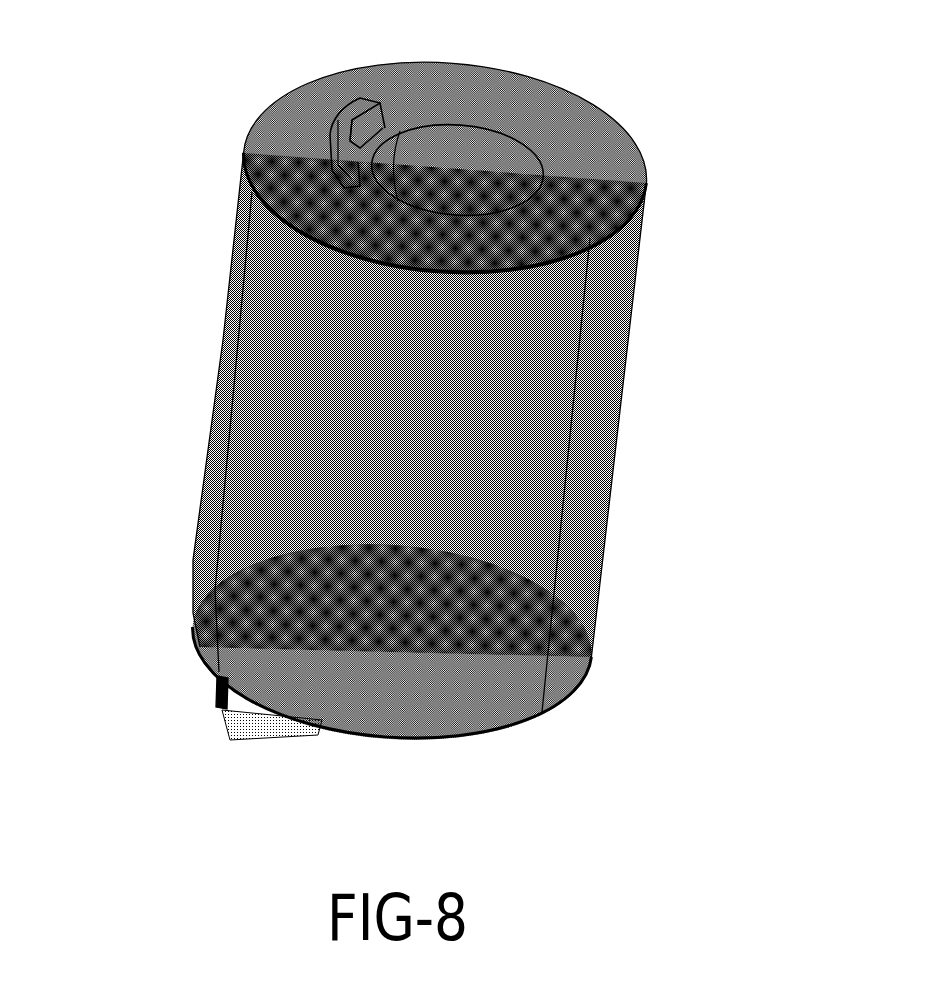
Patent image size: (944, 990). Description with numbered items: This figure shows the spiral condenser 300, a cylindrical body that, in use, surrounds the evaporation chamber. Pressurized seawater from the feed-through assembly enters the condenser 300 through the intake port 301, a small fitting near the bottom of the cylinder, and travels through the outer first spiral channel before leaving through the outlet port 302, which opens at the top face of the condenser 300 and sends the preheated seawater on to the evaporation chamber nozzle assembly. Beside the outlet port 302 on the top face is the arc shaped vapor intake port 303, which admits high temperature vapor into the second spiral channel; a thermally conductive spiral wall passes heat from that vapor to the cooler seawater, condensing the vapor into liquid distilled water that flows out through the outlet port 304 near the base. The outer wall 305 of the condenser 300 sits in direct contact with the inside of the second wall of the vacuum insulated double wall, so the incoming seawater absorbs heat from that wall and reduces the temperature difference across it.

The condenser 300 is at (408, 417).
The intake port 301 is at (215, 685).
The outlet port 302 is at (367, 178).
The arc shaped vapor intake port 303 is at (327, 115).
The outlet port 304 is at (230, 733).
The outer wall 305 is at (227, 360).